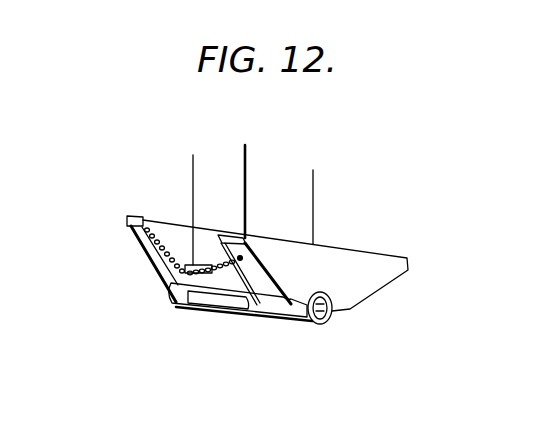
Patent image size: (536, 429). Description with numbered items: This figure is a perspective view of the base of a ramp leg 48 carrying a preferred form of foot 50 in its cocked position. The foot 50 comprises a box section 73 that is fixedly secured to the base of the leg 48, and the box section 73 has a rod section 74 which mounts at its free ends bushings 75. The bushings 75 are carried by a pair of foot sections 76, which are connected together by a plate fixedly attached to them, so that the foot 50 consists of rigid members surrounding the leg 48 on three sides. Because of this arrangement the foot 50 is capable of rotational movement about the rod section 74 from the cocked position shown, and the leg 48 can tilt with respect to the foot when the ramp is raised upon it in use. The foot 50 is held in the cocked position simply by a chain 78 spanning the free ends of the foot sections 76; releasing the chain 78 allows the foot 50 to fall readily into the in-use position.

The leg 48 is at (300, 203).
The foot 50 is at (358, 282).
The box section 73 is at (200, 266).
The rod section 74 is at (257, 312).
The bushing 75 is at (303, 321).
The foot section 76 is at (150, 224).
The chain 78 is at (166, 246).